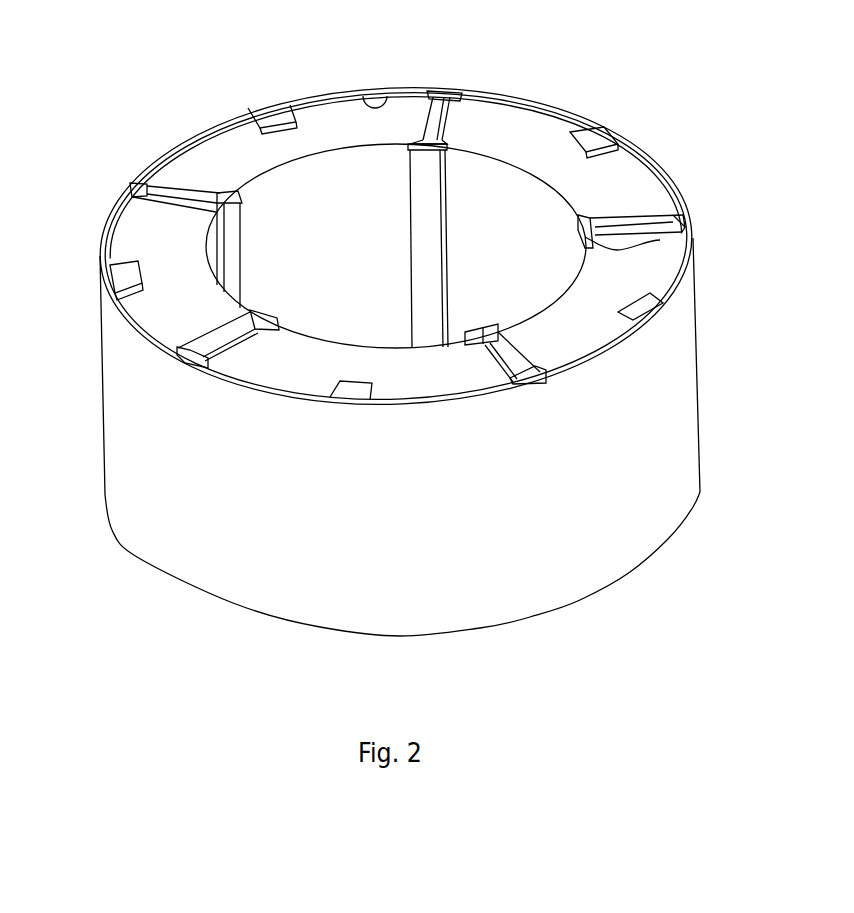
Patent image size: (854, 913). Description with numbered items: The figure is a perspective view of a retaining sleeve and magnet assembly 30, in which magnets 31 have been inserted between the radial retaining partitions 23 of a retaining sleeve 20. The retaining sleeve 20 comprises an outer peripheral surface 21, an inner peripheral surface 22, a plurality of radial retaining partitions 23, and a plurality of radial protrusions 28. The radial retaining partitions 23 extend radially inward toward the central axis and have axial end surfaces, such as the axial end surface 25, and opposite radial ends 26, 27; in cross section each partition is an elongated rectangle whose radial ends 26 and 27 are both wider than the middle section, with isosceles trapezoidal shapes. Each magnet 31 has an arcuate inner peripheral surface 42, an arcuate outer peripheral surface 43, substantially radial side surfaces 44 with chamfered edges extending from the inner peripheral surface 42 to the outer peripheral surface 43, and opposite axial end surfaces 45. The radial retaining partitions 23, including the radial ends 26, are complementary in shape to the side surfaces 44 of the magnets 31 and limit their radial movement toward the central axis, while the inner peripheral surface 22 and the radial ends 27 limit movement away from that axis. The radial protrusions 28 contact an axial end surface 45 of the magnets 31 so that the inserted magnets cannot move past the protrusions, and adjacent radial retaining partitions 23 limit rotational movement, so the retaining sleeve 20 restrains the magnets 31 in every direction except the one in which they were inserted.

The retaining sleeve 20 is at (554, 481).
The outer peripheral surface 21 is at (698, 342).
The inner peripheral surface 22 is at (630, 147).
The radial retaining partitions 23 is at (430, 185).
The axial end surface 25 is at (628, 217).
The radial end 26 is at (660, 240).
The radial end 27 is at (683, 212).
The radial protrusions 28 is at (270, 118).
The retaining sleeve and magnet assembly 30 is at (635, 604).
The magnets 31 is at (438, 382).
The arcuate inner peripheral surface 42 is at (333, 205).
The arcuate outer peripheral surface 43 is at (394, 96).
The side surfaces 44 is at (203, 343).
The axial end surfaces 45 is at (148, 307).